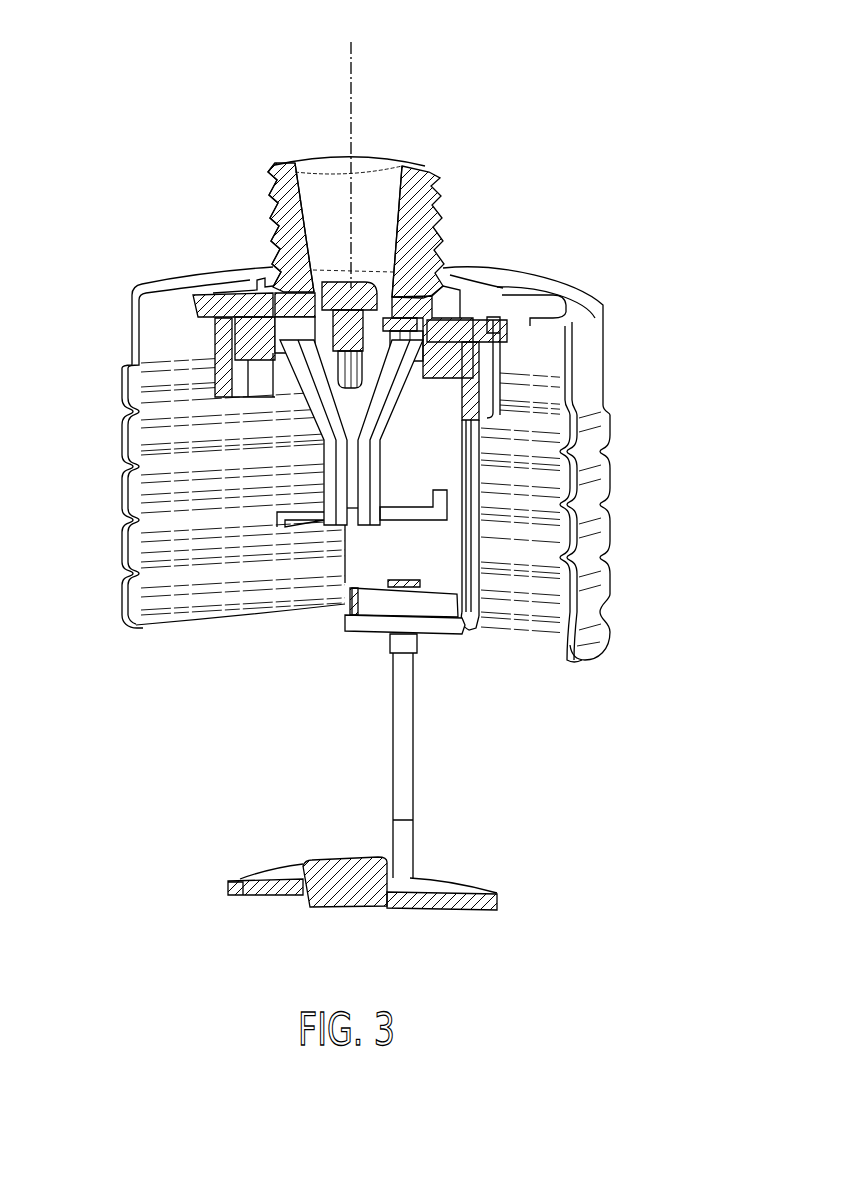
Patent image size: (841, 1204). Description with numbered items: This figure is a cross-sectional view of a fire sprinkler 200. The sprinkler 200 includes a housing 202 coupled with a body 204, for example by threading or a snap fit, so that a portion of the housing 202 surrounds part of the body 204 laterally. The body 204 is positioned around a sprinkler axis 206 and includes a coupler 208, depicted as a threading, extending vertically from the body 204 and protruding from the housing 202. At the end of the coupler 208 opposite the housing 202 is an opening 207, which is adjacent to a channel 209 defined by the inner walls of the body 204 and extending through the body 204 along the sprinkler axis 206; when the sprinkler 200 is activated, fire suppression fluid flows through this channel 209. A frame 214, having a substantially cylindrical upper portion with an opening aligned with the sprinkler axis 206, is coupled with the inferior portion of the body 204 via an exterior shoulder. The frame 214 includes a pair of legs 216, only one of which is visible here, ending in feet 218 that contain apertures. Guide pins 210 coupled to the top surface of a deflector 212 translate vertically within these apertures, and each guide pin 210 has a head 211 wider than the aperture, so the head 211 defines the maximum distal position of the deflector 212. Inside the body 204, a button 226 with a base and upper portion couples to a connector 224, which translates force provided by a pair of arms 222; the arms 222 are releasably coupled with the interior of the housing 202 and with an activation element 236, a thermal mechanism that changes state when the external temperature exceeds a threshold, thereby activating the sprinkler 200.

The sprinkler 200 is at (148, 92).
The housing 202 is at (594, 361).
The body 204 is at (195, 303).
The sprinkler axis 206 is at (352, 58).
The opening 207 is at (388, 176).
The coupler 208 is at (273, 181).
The channel 209 is at (330, 226).
The guide pins 210 is at (403, 744).
The head 211 is at (400, 590).
The deflector 212 is at (500, 893).
The frame 214 is at (493, 392).
The legs 216 is at (484, 556).
The feet 218 is at (470, 626).
The arms 222 is at (332, 460).
The connector 224 is at (300, 353).
The button 226 is at (328, 297).
The activation element 236 is at (300, 513).